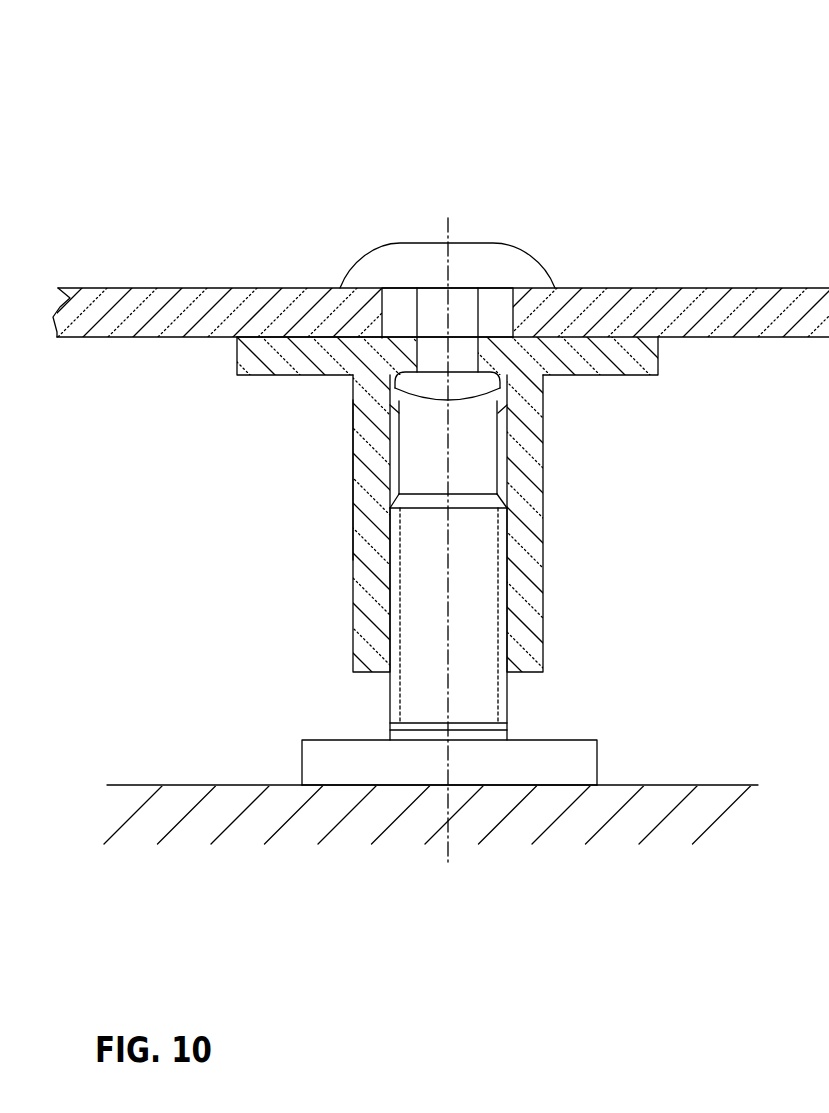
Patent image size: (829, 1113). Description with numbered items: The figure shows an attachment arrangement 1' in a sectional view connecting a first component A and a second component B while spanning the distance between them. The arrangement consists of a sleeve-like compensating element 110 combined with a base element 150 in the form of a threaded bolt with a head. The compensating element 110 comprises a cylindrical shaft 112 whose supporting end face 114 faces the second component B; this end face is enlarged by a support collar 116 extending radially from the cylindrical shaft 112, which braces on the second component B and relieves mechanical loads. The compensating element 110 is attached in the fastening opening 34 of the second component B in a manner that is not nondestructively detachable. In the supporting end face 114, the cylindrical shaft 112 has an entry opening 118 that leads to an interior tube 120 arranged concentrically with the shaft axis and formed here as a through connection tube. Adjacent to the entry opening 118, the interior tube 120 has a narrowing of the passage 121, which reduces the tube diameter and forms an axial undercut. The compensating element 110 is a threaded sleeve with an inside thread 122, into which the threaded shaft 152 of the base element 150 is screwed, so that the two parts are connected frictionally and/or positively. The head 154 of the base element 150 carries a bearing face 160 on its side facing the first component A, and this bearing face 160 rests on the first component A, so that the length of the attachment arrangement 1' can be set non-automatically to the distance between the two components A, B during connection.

The attachment arrangement 1' is at (414, 464).
The second component B is at (703, 315).
The first component A is at (652, 797).
The entry opening 118 is at (478, 342).
The fastening opening 34 is at (495, 313).
The narrowing of the passage 121 is at (420, 358).
The supporting end face 114 is at (330, 333).
The support collar 116 is at (260, 347).
The compensating element 110 is at (530, 557).
The cylindrical shaft 112 is at (370, 484).
The inside thread 122 is at (505, 477).
The interior tube 120 is at (473, 442).
The base element 150 is at (483, 695).
The threaded shaft 152 is at (412, 712).
The head 154 is at (323, 748).
The bearing face 160 is at (348, 785).